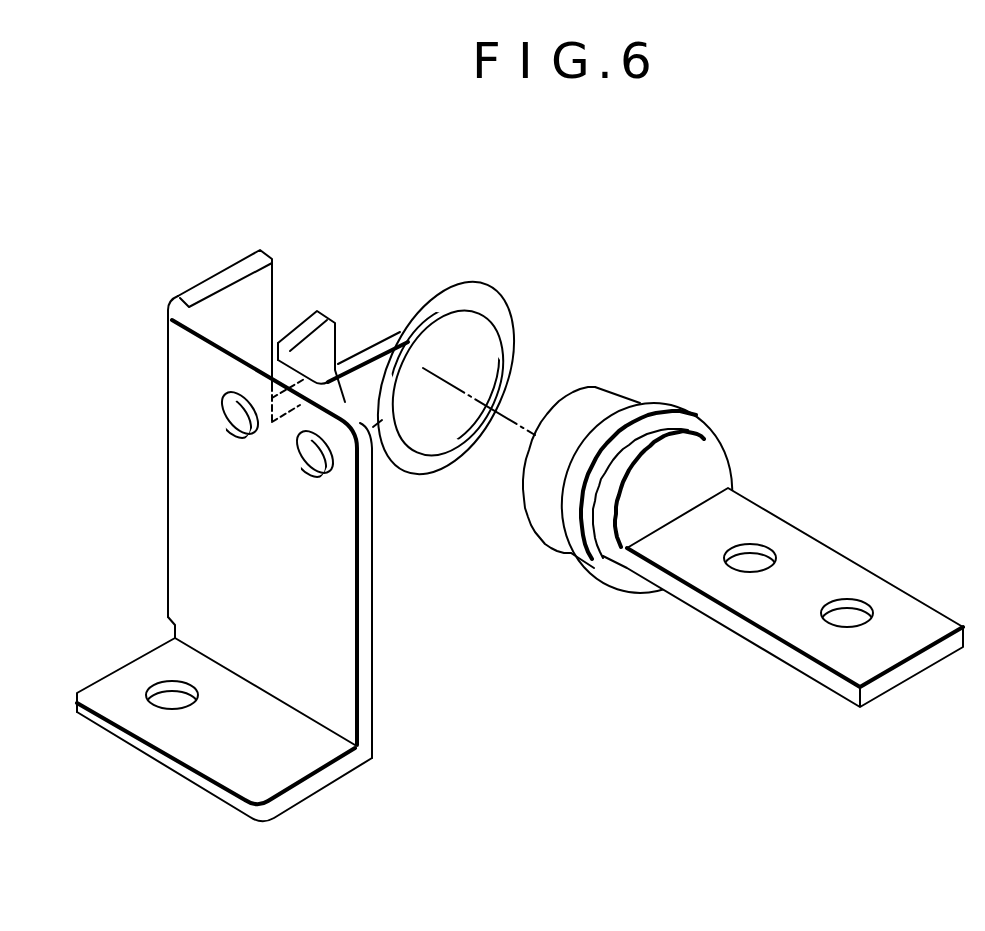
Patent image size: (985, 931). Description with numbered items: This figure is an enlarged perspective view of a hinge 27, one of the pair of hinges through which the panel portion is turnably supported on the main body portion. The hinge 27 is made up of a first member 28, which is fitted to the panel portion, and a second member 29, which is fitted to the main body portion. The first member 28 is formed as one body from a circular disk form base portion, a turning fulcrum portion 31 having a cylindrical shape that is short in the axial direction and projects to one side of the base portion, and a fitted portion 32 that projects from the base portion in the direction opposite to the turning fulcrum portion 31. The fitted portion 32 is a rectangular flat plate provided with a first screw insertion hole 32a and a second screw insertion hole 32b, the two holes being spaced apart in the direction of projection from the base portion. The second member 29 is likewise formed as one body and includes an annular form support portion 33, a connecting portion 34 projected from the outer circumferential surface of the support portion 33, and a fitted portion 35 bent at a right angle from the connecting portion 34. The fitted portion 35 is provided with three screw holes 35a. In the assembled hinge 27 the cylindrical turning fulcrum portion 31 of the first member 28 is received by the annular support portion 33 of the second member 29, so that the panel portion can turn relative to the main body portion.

The hinge 27 is at (488, 186).
The first member 28 is at (653, 412).
The second member 29 is at (455, 288).
The turning fulcrum portion 31 is at (545, 517).
The fitted portion 32 is at (783, 578).
The first screw insertion hole 32a is at (757, 563).
The second screw insertion hole 32b is at (847, 620).
The support portion 33 is at (507, 340).
The connecting portion 34 is at (253, 293).
The fitted portion 35 is at (198, 488).
The screw hole 35a is at (233, 430).